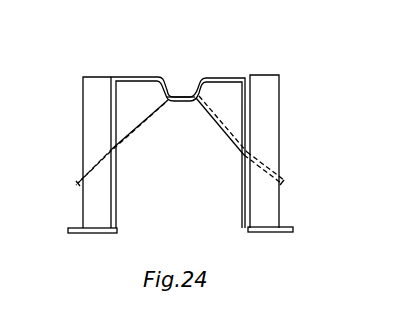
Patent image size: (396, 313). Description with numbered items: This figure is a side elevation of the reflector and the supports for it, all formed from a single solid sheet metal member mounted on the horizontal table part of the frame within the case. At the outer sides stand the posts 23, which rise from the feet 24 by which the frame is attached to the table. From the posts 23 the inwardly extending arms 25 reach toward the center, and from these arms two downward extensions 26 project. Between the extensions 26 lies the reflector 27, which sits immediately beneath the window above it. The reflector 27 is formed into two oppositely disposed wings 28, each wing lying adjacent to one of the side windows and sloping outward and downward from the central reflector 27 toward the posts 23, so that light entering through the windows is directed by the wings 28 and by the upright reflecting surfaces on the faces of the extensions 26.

The posts 23 is at (272, 141).
The feet 24 is at (287, 228).
The inwardly extending arms 25 is at (222, 78).
The downward extensions 26 is at (220, 108).
The reflector 27 is at (178, 91).
The wings 28 is at (285, 182).